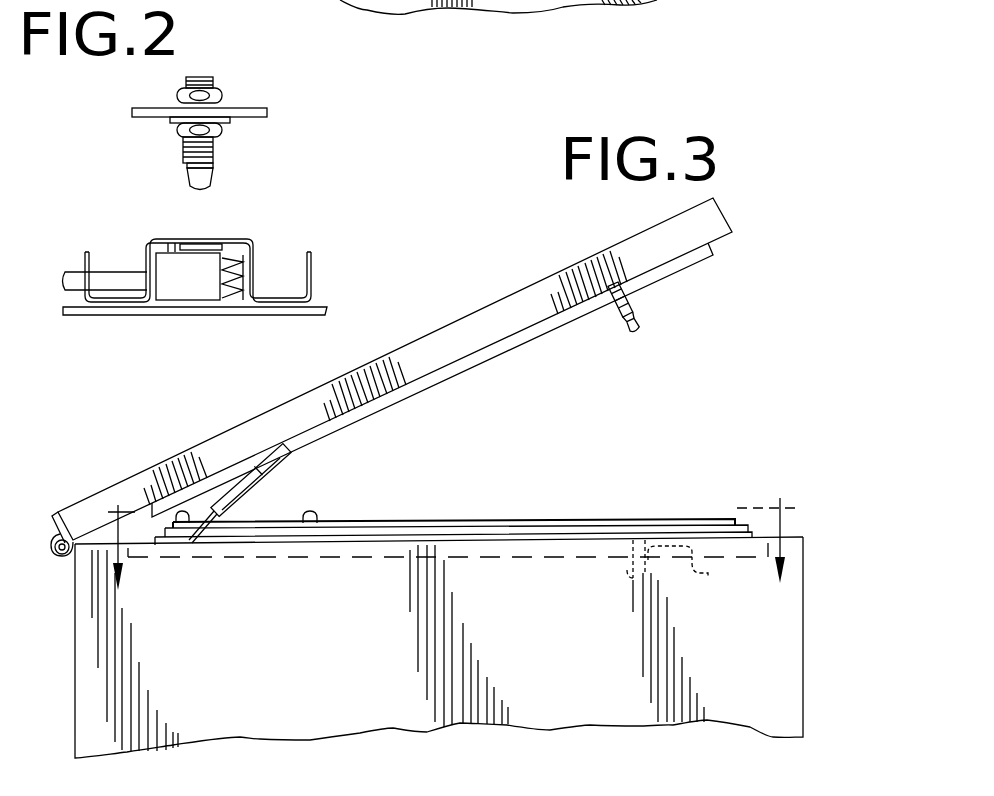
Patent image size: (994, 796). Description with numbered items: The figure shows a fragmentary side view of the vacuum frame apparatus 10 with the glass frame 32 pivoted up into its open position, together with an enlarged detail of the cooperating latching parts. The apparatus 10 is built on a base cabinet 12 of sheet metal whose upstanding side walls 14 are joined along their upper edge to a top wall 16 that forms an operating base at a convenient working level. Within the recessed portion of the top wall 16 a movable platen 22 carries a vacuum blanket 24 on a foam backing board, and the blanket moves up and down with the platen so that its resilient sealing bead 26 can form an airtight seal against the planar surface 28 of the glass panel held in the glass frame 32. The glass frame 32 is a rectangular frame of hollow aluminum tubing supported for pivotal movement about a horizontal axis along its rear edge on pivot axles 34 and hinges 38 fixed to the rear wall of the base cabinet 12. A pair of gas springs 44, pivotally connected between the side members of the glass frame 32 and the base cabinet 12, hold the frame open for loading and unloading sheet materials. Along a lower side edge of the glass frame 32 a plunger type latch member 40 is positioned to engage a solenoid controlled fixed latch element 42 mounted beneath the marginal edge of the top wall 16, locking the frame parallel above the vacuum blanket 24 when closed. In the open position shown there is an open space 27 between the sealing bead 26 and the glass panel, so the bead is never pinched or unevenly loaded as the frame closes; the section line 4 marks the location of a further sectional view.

In FIG. 3, the section line 4- 4 is at (453, 531).
In FIG. 2, the vacuum frame apparatus 10 is at (405, 14).
In FIG. 3, the vacuum frame apparatus 10 is at (737, 389).
In FIG. 2, the base cabinet 12 is at (427, 7).
In FIG. 3, the base cabinet 12 is at (366, 712).
In FIG. 2, the side walls 14 is at (557, 0).
In FIG. 3, the side walls 14 is at (548, 614).
In FIG. 3, the top wall 16 is at (805, 537).
In FIG. 3, the movable platen 22 is at (388, 531).
In FIG. 3, the vacuum blanket 24 is at (633, 518).
In FIG. 3, the resilient sealing bead 26 is at (317, 523).
In FIG. 3, the open space 27 is at (189, 523).
In FIG. 3, the planar surface 28 is at (583, 318).
In FIG. 3, the glass frame 32 is at (522, 297).
In FIG. 3, the pivot axles 34 is at (58, 557).
In FIG. 3, the hinges 38 is at (54, 541).
In FIG. 2, the latch member 40 is at (217, 181).
In FIG. 3, the latch member 40 is at (642, 329).
In FIG. 2, the fixed latch element 42 is at (175, 357).
In FIG. 3, the gas springs 44 is at (265, 477).